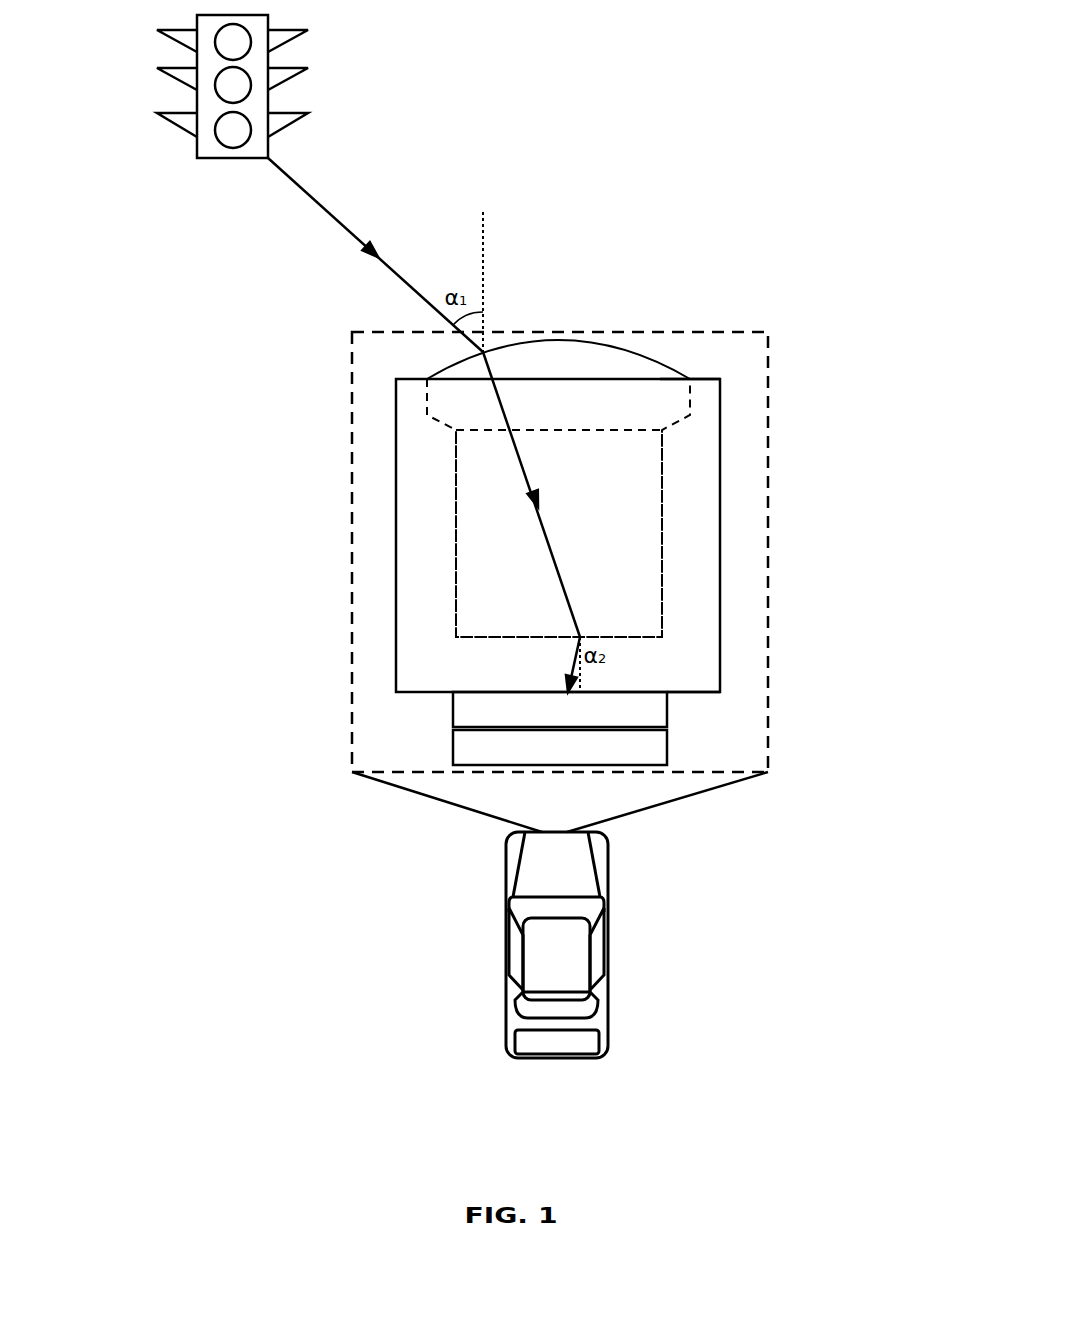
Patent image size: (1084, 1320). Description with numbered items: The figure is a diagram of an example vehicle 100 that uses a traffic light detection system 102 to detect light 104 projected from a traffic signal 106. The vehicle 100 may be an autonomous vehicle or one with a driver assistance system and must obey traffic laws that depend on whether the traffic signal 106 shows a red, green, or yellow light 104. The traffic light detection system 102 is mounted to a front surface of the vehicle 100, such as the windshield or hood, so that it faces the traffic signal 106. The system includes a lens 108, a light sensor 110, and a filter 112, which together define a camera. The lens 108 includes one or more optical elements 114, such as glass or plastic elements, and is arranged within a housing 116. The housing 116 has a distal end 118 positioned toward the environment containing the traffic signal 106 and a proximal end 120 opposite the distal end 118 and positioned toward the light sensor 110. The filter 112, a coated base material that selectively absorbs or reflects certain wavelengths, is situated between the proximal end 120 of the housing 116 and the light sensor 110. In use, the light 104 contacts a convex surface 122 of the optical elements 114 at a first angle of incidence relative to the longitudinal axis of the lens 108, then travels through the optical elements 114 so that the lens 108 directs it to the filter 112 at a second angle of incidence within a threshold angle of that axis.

The vehicle 100 is at (489, 888).
The traffic light detection system 102 is at (284, 463).
The light 104 is at (345, 233).
The traffic signal 106 is at (352, 45).
The lens 108 is at (720, 547).
The light sensor 110 is at (652, 759).
The filter 112 is at (610, 721).
The optical elements 114 is at (569, 489).
The housing 116 is at (720, 455).
The distal end 118 is at (700, 379).
The proximal end 120 is at (683, 692).
The convex surface 122 is at (622, 345).